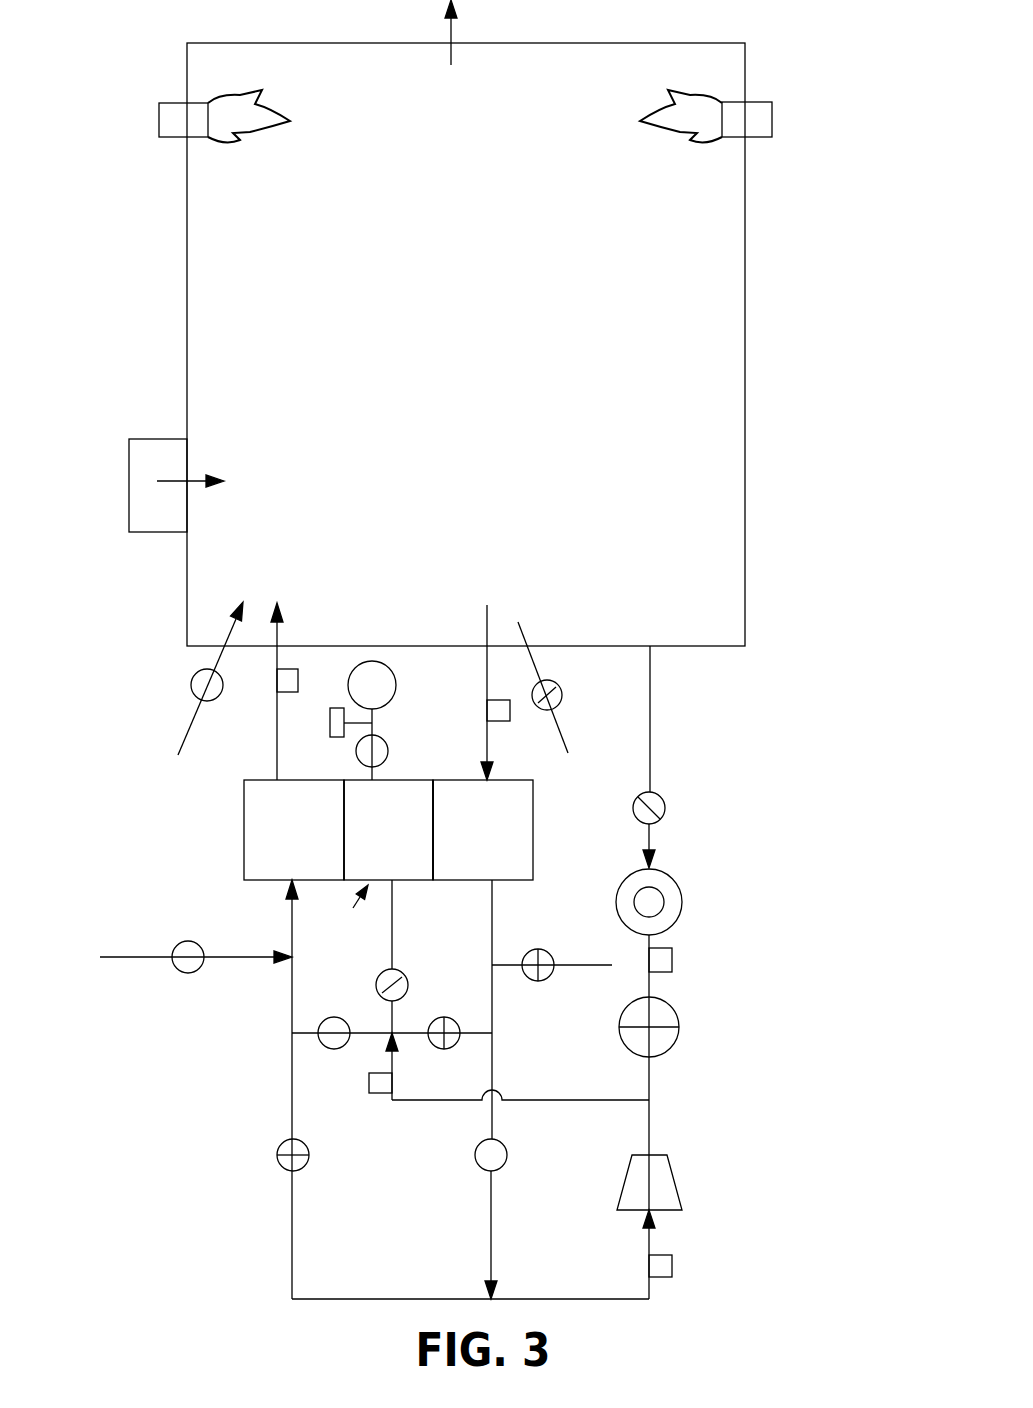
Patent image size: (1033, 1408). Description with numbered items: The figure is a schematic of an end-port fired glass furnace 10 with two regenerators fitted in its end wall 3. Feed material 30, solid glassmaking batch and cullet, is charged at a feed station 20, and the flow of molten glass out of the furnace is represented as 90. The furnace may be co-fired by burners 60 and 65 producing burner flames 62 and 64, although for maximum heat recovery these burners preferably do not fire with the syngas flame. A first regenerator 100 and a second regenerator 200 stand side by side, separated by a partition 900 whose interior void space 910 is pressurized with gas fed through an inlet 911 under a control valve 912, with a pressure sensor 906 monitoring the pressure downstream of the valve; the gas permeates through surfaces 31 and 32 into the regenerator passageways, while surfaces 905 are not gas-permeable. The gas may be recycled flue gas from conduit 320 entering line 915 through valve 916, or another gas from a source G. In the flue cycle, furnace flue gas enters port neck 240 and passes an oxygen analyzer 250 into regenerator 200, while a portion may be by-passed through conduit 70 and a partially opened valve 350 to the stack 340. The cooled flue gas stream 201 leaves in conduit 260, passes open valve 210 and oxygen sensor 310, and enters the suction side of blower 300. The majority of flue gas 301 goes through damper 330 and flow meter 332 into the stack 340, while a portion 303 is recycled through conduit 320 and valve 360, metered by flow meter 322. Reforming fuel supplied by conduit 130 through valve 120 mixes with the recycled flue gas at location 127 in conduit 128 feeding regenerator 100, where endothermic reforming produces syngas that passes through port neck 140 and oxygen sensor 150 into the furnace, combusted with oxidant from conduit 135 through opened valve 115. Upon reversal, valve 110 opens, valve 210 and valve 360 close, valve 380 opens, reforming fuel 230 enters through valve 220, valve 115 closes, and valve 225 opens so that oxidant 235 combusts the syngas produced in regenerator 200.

The end wall 3 is at (577, 646).
The end-port glass furnace 10 is at (366, 221).
The feed station 20 is at (148, 474).
The feed material 30 is at (150, 477).
The partition surface 31 is at (344, 840).
The partition surface 32 is at (433, 840).
The burner 60 is at (172, 107).
The burner flame 62 is at (252, 109).
The burner flame 64 is at (681, 104).
The burner 65 is at (763, 119).
The conduit 70 is at (650, 733).
The flow of molten glass 90 is at (466, 32).
The first regenerator 100 is at (272, 841).
The valve 110 is at (307, 1169).
The valve 115 is at (189, 685).
The valve 120 is at (188, 971).
The mixing location 127 is at (292, 957).
The conduit 128 is at (292, 922).
The reforming fuel conduit 130 is at (194, 946).
The oxidant conduit 135 is at (193, 678).
The port neck 140 is at (261, 691).
The oxygen sensor 150 is at (306, 682).
The second regenerator 200 is at (467, 841).
The cooled flue gas stream 201 is at (492, 903).
The valve 210 is at (511, 1155).
The valve 220 is at (538, 952).
The valve 225 is at (568, 689).
The reforming fuel 230 is at (552, 954).
The oxidant 235 is at (561, 687).
The port neck 240 is at (502, 692).
The oxygen analyzer 250 is at (507, 724).
The conduit 260 is at (492, 1057).
The blower 300 is at (675, 1183).
The flue gas 301 is at (649, 1082).
The recycled flue gas portion 303 is at (420, 1050).
The oxygen sensor 310 is at (678, 1254).
The conduit 320 is at (520, 1110).
The flow meter 322 is at (362, 1084).
The damper 330 is at (669, 1027).
The flow meter 332 is at (681, 966).
The stack 340 is at (666, 899).
The valve 350 is at (669, 830).
The valve 360 is at (392, 1020).
The valve 380 is at (444, 1020).
The partition 900 is at (342, 904).
The non-permeable surfaces 905 is at (430, 779).
The pressure sensor 906 is at (333, 722).
The void space 910 is at (376, 831).
The inlet 911 is at (383, 763).
The control valve 912 is at (381, 720).
The line 915 is at (392, 934).
The valve 916 is at (404, 977).